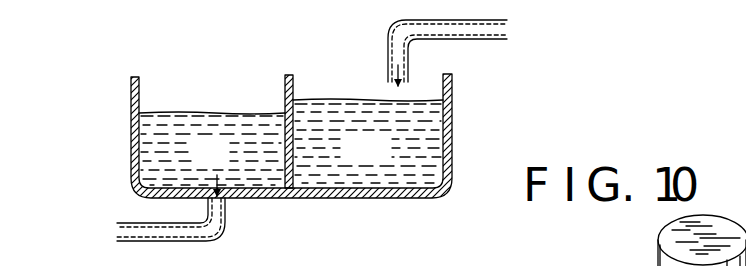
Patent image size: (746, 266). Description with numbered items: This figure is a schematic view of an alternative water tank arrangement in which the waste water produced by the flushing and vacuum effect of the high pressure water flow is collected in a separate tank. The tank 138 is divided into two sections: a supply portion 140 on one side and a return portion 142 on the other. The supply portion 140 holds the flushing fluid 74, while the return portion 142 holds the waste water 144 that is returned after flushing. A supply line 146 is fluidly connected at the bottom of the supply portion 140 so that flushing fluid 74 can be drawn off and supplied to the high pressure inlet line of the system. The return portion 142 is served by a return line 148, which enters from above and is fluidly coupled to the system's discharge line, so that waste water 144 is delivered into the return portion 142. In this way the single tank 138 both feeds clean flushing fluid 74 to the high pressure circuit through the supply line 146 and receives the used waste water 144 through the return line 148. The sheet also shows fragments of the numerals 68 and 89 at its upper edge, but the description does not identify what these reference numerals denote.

The tank 138 is at (124, 107).
The supply portion 140 is at (210, 113).
The return portion 142 is at (345, 100).
The flushing fluid 74 is at (227, 159).
The waste water 144 is at (388, 158).
The supply line 146 is at (218, 238).
The return line 148 is at (462, 20).
The element 68 is at (210, 5).
The element 89 is at (340, 2).